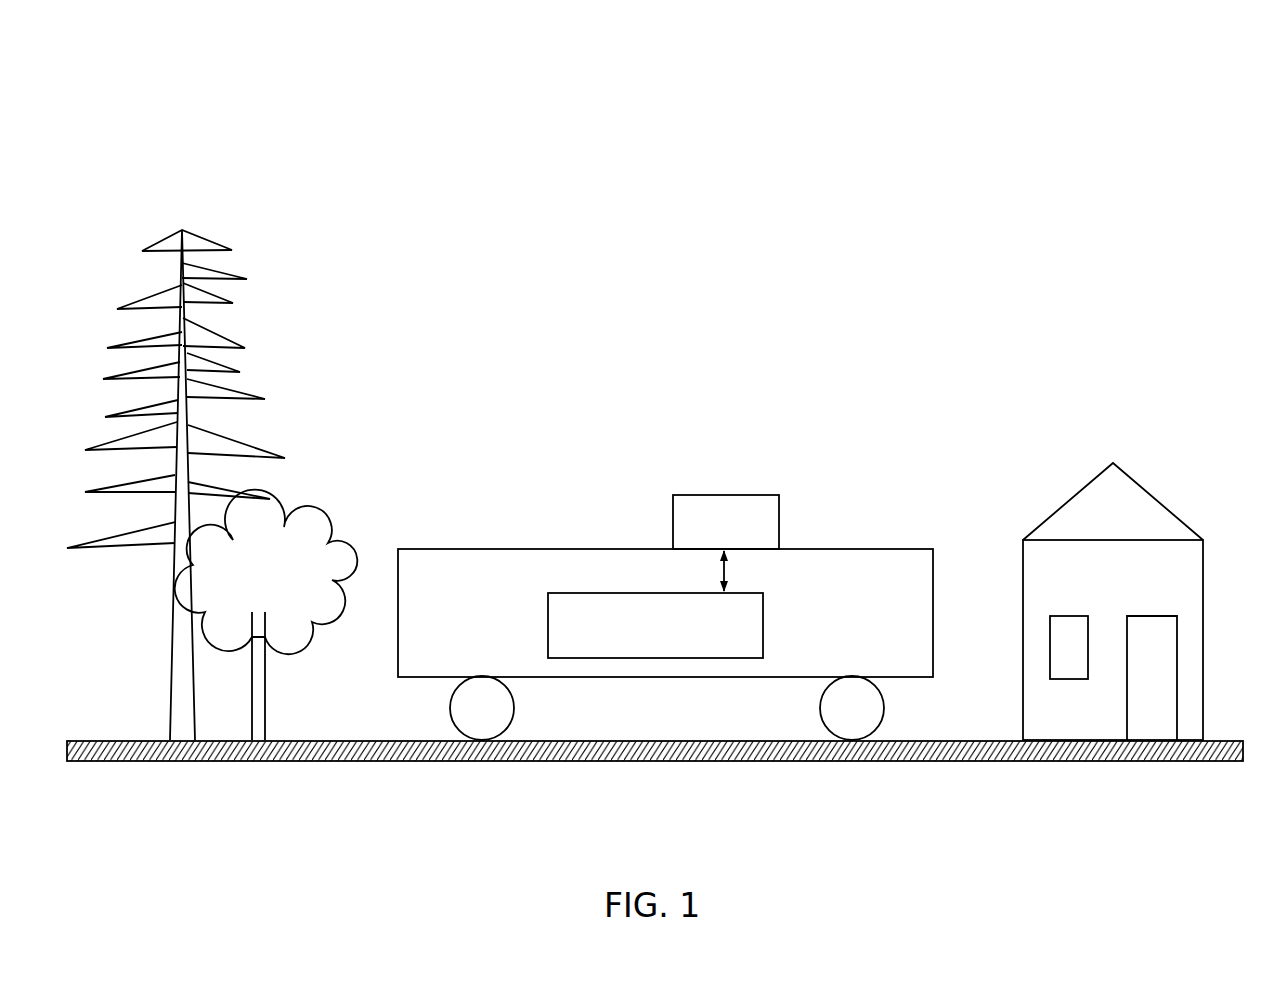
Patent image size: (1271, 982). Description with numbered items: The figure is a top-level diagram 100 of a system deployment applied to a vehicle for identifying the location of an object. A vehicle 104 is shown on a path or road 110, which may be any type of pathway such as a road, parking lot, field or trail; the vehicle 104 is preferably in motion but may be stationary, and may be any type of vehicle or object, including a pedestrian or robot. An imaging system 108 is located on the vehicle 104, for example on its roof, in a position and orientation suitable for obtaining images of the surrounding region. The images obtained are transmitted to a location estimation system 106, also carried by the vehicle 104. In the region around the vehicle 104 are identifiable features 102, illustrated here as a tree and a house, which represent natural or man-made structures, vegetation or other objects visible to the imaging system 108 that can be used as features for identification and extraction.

The top-level diagram 100 is at (663, 31).
The identifiable features 102 is at (310, 324).
The vehicle 104 is at (515, 549).
The location estimation system 106 is at (548, 620).
The imaging system 108 is at (728, 494).
The path or road 110 is at (380, 761).